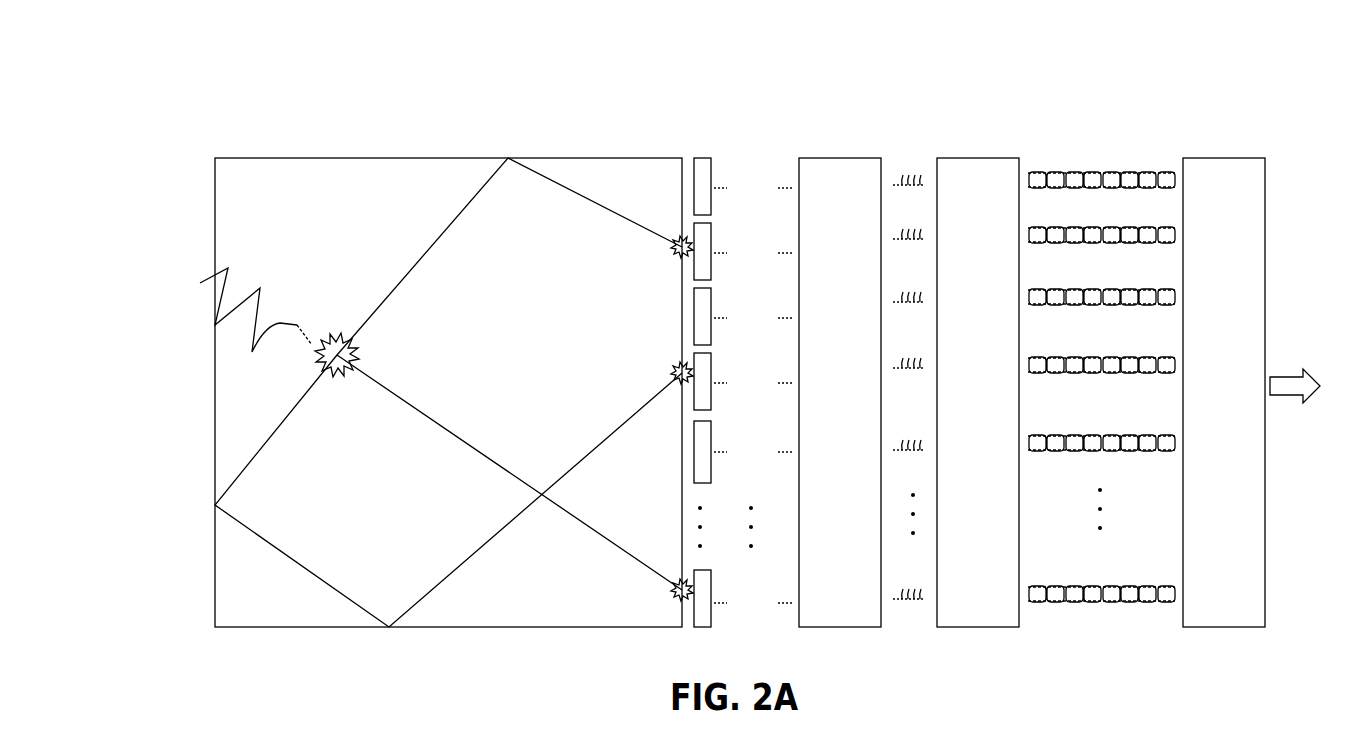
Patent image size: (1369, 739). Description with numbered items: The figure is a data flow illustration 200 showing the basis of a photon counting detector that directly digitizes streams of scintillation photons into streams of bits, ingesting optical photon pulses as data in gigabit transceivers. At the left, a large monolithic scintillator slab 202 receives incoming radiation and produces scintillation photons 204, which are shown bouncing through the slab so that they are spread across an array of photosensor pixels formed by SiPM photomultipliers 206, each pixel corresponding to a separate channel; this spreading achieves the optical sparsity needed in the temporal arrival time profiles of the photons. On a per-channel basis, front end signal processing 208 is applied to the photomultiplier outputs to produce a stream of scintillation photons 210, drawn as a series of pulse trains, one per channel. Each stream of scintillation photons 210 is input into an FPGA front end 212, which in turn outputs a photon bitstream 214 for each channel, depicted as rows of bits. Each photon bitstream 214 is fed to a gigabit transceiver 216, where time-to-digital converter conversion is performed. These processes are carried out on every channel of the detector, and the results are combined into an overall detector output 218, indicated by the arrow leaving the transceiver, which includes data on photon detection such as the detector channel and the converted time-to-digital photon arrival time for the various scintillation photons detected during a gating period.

The data flow illustration 200 is at (162, 70).
The monolithic scintillator slab 202 is at (215, 445).
The scintillation photons 204 is at (676, 250).
The SiPM photomultipliers 206 is at (773, 148).
The front end signal processing 208 is at (812, 158).
The stream of scintillation photons 210 is at (904, 178).
The FPGA front end 212 is at (982, 158).
The photon bitstream 214 is at (1172, 158).
The gigabit transceiver 216 is at (1193, 158).
The detector output 218 is at (1287, 372).